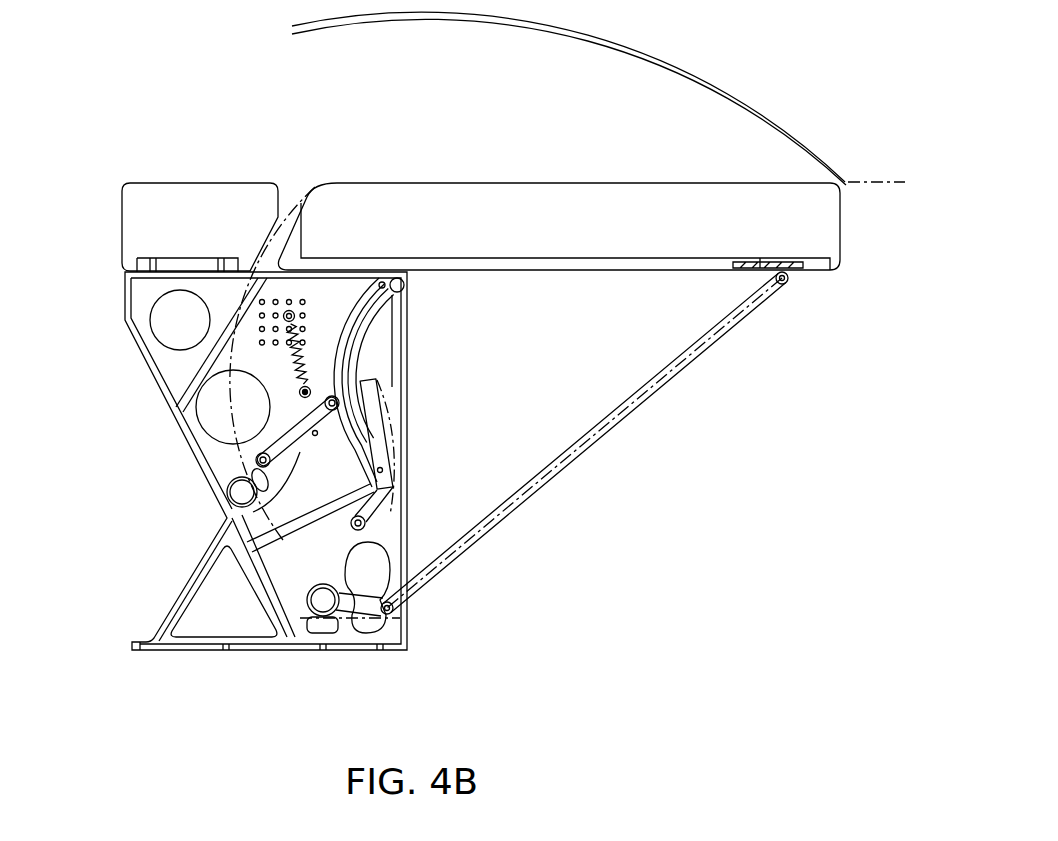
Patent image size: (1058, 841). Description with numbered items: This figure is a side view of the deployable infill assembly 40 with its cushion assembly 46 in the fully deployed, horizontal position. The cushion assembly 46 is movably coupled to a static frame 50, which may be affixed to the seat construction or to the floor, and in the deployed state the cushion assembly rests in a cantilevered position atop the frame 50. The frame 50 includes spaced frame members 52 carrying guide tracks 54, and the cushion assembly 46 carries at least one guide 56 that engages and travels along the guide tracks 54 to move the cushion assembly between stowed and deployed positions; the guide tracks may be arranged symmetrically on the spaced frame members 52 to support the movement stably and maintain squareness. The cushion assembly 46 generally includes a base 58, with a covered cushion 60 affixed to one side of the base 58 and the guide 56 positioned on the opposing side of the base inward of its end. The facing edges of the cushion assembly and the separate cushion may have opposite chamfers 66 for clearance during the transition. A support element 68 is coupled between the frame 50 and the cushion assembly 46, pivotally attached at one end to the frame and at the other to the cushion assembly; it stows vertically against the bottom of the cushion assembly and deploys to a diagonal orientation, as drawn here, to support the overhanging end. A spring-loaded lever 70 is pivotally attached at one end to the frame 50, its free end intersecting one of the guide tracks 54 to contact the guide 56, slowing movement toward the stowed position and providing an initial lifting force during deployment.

The deployable infill assembly 40 is at (135, 148).
The cushion assembly 46 is at (697, 182).
The frame 50 is at (134, 348).
The spaced frame members 52 is at (224, 465).
The guide tracks 54 is at (358, 350).
The guide 56 is at (391, 280).
The base 58 is at (551, 270).
The covered cushion 60 is at (578, 207).
The chamfers 66 is at (290, 225).
The support element 68 is at (592, 448).
The spring-loaded lever 70 is at (226, 519).